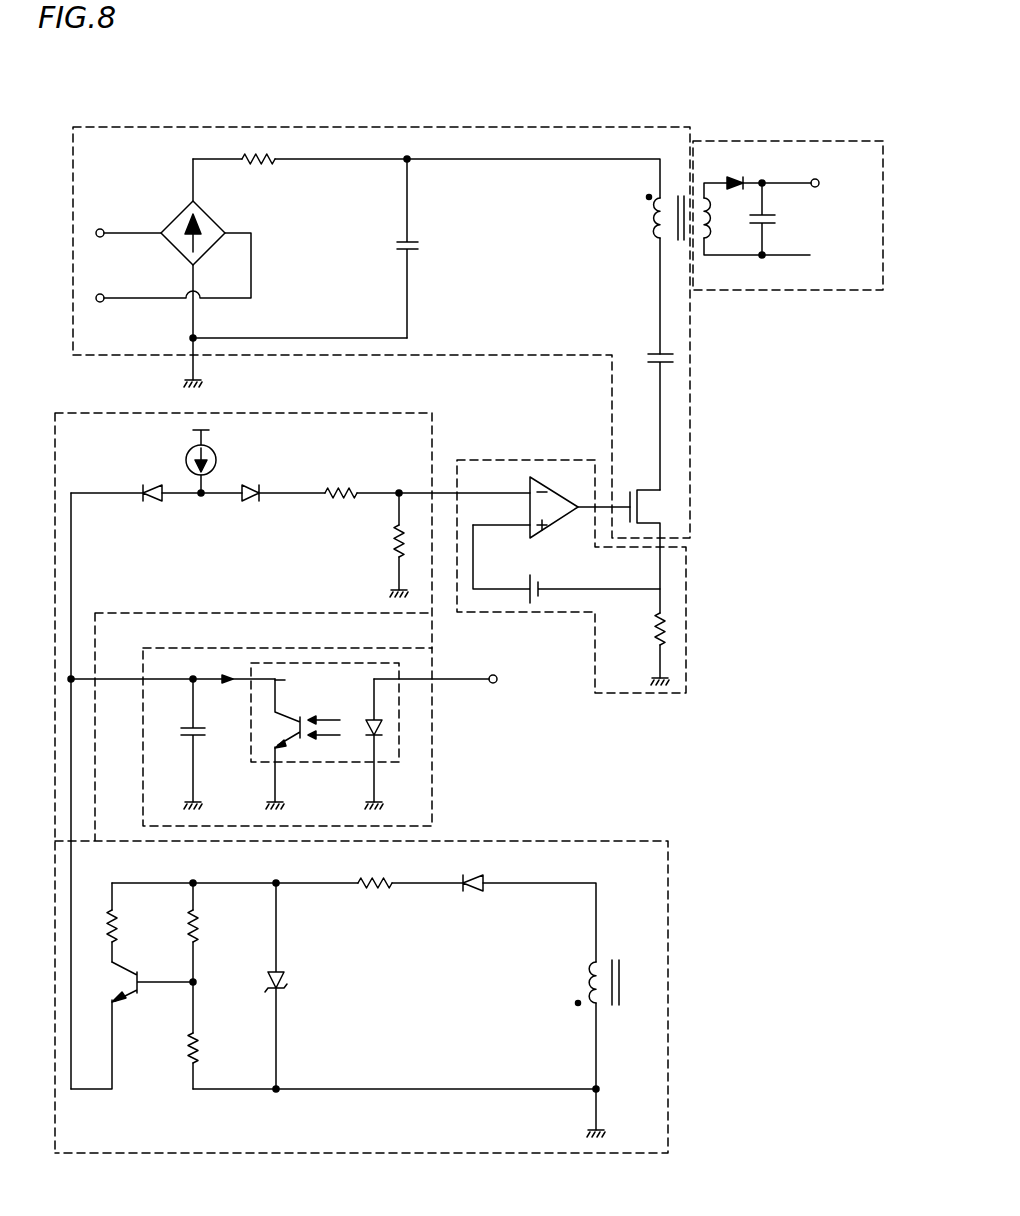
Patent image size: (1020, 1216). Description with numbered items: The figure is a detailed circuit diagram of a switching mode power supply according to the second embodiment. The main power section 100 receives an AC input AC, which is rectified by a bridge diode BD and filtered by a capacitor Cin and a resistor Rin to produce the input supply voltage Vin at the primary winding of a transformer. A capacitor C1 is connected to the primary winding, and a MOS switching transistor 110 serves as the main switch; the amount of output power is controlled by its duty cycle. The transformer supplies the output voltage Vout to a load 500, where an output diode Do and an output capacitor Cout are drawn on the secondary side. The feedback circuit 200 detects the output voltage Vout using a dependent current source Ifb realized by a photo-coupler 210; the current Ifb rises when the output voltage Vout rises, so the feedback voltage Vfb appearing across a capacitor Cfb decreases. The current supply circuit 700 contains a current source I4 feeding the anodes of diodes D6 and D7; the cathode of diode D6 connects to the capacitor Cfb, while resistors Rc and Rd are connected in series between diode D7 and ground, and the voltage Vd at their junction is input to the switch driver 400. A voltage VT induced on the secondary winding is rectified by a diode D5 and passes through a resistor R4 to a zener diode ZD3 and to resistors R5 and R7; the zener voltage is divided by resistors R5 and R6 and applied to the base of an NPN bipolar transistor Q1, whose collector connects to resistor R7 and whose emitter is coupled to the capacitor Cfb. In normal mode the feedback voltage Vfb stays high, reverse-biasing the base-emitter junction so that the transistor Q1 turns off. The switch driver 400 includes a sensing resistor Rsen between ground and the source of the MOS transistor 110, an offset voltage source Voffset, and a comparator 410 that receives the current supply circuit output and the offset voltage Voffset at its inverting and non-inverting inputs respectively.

The main power section 100 is at (690, 432).
The MOS switching transistor 110 is at (648, 490).
The feedback circuit 200 is at (434, 779).
The photo-coupler 210 is at (432, 727).
The switch driver 400 is at (686, 620).
The comparator 410 is at (549, 480).
The load 500 is at (827, 140).
The current supply circuit 700 is at (669, 938).
The resistor Rin is at (426, 165).
The bridge diode BD is at (199, 269).
The capacitor Cin is at (321, 250).
The input supply voltage Vin is at (424, 148).
The AC input AC is at (167, 265).
The output diode Do is at (766, 170).
The output capacitor Cout is at (786, 219).
The output voltage Vout is at (840, 183).
The capacitor C1 is at (647, 419).
The offset voltage Voffset is at (566, 564).
The sensing resistor Rsen is at (634, 649).
The current source I4 is at (210, 463).
The diode D6 is at (156, 503).
The diode D7 is at (278, 503).
The resistor Rc is at (362, 480).
The detection voltage Vd is at (398, 479).
The resistor Rd is at (383, 545).
The feedback voltage Vfb is at (171, 667).
The dependent current source Ifb is at (220, 667).
The capacitor Cfb is at (210, 744).
The resistor R7 is at (126, 922).
The resistor R5 is at (206, 958).
The resistor R6 is at (206, 1061).
The NPN bipolar transistor Q1 is at (152, 994).
The zener diode ZD3 is at (296, 986).
The resistor R4 is at (410, 897).
The diode D5 is at (526, 918).
The voltage induced on the secondary winding VT is at (615, 1043).